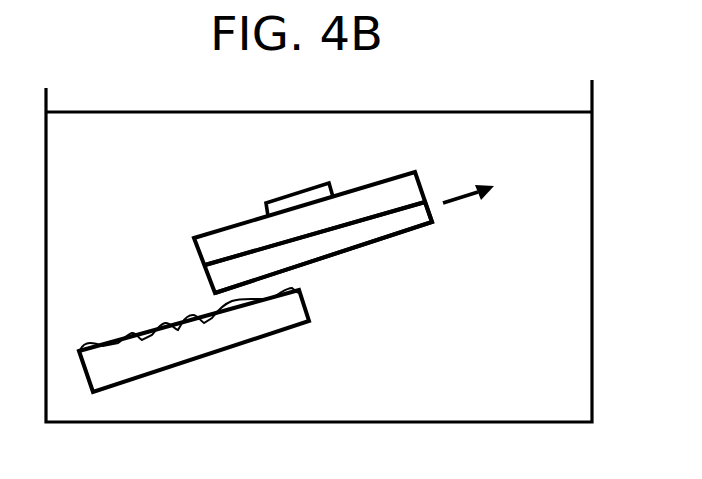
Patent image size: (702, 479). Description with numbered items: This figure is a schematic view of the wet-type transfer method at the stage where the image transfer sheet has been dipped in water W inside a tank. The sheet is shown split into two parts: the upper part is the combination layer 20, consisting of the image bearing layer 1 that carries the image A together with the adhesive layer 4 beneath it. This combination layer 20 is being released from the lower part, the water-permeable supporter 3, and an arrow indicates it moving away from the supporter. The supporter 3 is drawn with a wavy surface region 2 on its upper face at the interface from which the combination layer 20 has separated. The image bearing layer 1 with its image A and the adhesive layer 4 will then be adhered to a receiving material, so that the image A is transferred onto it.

The image bearing layer 1 is at (417, 182).
The deposited film 2 is at (285, 290).
The water-permeable supporter 3 is at (299, 312).
The adhesive layer 4 is at (425, 205).
The combination layer 20 is at (196, 268).
The image A is at (330, 187).
The liquid W is at (577, 167).